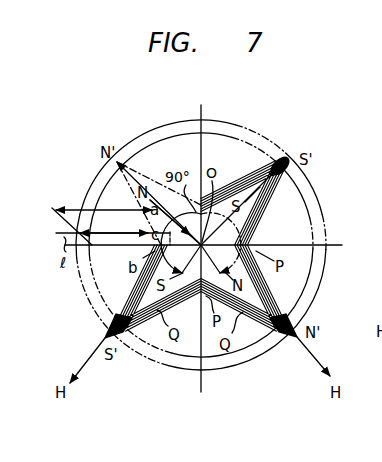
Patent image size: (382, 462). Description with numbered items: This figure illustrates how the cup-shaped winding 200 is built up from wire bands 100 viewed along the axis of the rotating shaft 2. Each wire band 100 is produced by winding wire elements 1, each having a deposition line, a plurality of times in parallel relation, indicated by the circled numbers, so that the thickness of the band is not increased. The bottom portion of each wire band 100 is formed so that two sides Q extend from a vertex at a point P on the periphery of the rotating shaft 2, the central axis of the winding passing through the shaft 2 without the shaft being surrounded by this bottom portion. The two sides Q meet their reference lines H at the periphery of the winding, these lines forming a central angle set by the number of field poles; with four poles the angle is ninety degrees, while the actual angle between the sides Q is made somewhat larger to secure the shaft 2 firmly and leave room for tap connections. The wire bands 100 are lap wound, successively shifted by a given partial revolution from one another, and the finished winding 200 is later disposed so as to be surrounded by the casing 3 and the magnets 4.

The wire band 100 is at (261, 147).
The cup-shaped winding 200 is at (273, 135).
The wire element 1 is at (268, 190).
The rotating shaft 2 is at (262, 203).
The casing 3 is at (255, 226).
The magnet 4 is at (252, 250).